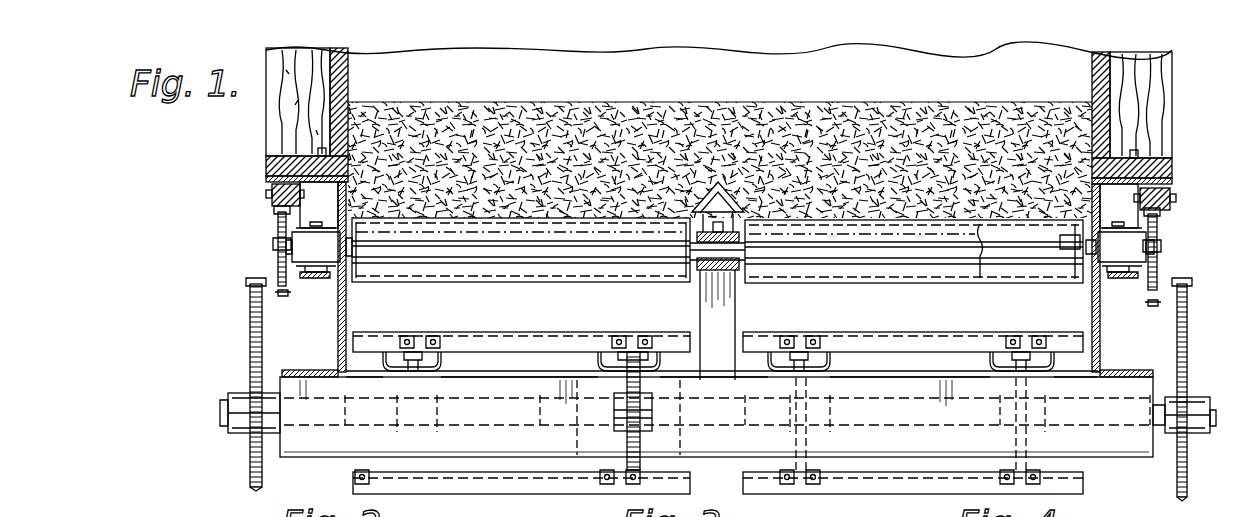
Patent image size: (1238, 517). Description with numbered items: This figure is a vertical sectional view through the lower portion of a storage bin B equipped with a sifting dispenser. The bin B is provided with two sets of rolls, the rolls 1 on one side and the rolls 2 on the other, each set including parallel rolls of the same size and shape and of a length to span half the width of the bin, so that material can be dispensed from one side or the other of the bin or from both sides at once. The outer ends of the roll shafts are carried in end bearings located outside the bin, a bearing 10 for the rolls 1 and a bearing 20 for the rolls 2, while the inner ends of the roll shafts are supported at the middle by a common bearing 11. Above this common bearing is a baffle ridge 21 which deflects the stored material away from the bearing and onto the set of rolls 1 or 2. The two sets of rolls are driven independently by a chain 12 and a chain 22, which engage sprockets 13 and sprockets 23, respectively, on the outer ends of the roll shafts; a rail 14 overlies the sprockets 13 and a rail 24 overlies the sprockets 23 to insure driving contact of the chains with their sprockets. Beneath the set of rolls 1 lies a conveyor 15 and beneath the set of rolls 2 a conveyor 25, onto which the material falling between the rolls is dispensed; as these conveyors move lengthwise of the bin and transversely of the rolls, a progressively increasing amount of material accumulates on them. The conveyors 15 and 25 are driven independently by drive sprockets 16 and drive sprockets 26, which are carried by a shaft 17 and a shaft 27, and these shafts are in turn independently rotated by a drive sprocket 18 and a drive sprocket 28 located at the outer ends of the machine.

The bin B is at (348, 76).
The rolls 1 is at (484, 270).
The rolls 2 is at (836, 278).
The bearing 10 is at (310, 232).
The common bearing 11 is at (736, 270).
The chain 12 is at (280, 292).
The sprockets 13 is at (298, 280).
The rail 14 is at (272, 192).
The conveyor 15 is at (572, 334).
The drive sprockets 16 is at (432, 366).
The shaft 17 is at (224, 414).
The drive sprocket 18 is at (250, 328).
The bearing 20 is at (1108, 240).
The baffle ridge 21 is at (732, 184).
The chain 22 is at (1160, 300).
The sprockets 23 is at (1146, 282).
The rail 24 is at (1170, 194).
The conveyor 25 is at (934, 334).
The drive sprockets 26 is at (820, 366).
The shaft 27 is at (1216, 426).
The drive sprocket 28 is at (1177, 342).